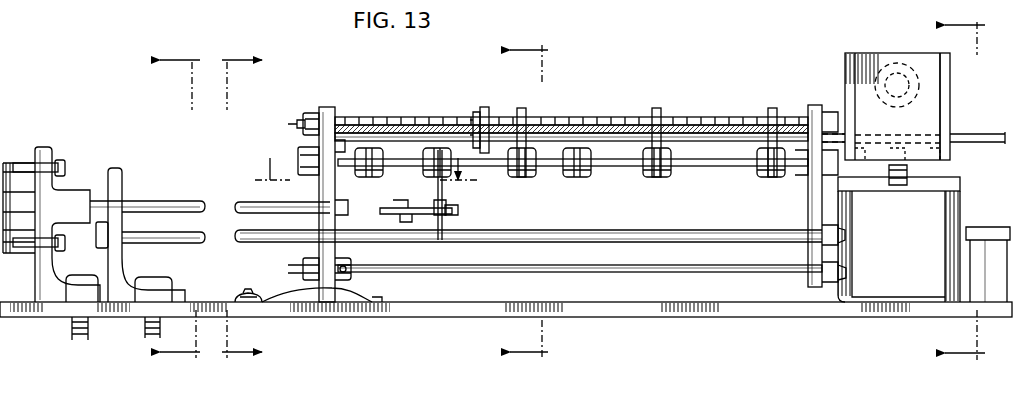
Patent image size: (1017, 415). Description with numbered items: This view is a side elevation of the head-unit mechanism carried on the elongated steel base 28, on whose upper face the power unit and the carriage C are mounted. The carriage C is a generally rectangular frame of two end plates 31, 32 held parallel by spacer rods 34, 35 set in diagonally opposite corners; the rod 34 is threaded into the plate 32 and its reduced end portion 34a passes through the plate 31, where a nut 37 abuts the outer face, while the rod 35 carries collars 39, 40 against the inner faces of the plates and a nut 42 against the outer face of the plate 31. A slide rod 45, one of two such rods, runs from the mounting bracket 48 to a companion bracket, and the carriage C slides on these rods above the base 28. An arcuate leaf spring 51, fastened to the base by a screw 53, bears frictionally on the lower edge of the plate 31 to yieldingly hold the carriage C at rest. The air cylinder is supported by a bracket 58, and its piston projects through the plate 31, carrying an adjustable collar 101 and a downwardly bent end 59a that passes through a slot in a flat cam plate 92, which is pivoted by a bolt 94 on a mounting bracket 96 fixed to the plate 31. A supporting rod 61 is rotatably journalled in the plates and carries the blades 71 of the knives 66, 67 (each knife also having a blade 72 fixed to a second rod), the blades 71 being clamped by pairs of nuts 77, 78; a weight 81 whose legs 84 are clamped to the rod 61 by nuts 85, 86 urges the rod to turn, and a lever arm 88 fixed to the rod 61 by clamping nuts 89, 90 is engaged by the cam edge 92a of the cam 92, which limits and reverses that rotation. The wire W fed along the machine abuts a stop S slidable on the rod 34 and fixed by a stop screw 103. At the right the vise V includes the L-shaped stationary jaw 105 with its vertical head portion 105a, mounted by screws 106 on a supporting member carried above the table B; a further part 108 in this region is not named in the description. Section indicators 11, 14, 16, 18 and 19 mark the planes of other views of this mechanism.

The base 28 is at (470, 315).
The bracket 58 is at (45, 150).
The mounting bracket 48 is at (118, 180).
The slide rod 45 is at (200, 250).
The screw 53 is at (245, 297).
The leaf spring 51 is at (280, 292).
The end plate 31 is at (326, 107).
The nut 37 is at (310, 113).
The reduced end portion 34a is at (298, 122).
The nut 42 is at (305, 265).
The collar 39 is at (345, 262).
The mounting bracket 96 is at (345, 140).
The carriage C is at (342, 105).
The collar 101 is at (335, 220).
The spacer rod 34 is at (408, 117).
The wire W is at (702, 136).
The supporting rod 61 is at (720, 178).
The clamping nut 89 is at (432, 150).
The bolt 94 is at (374, 178).
The clamping nut 77 is at (519, 178).
The clamping nut 78 is at (530, 178).
The blade 71 is at (657, 178).
The clamping nut 85 is at (567, 178).
The clamping nut 86 is at (581, 178).
The weight 81 is at (610, 178).
The clamping nut 90 is at (478, 150).
The stop screw 103 is at (490, 108).
The stop S is at (492, 114).
The knife 66 is at (527, 112).
The blade 72 is at (656, 108).
The knife 67 is at (662, 108).
The supporting leg 84 is at (582, 146).
The downwardly bent end 59a is at (418, 203).
The cam plate 92 is at (448, 214).
The lever arm 88 is at (458, 206).
The cam edge 92a is at (445, 232).
The collar 40 is at (528, 244).
The spacer rod 35 is at (612, 266).
The end plate 32 is at (815, 105).
The stationary jaw 105 is at (950, 90).
The housing wall 108 is at (950, 78).
The head portion 105a is at (928, 116).
The vise V is at (868, 55).
The screw 106 is at (893, 185).
The table B is at (606, 318).
The section line 19 is at (180, 199).
The section line 18 is at (242, 199).
The section line 16 is at (529, 191).
The section line 11 is at (963, 181).
The section line 14 is at (367, 169).